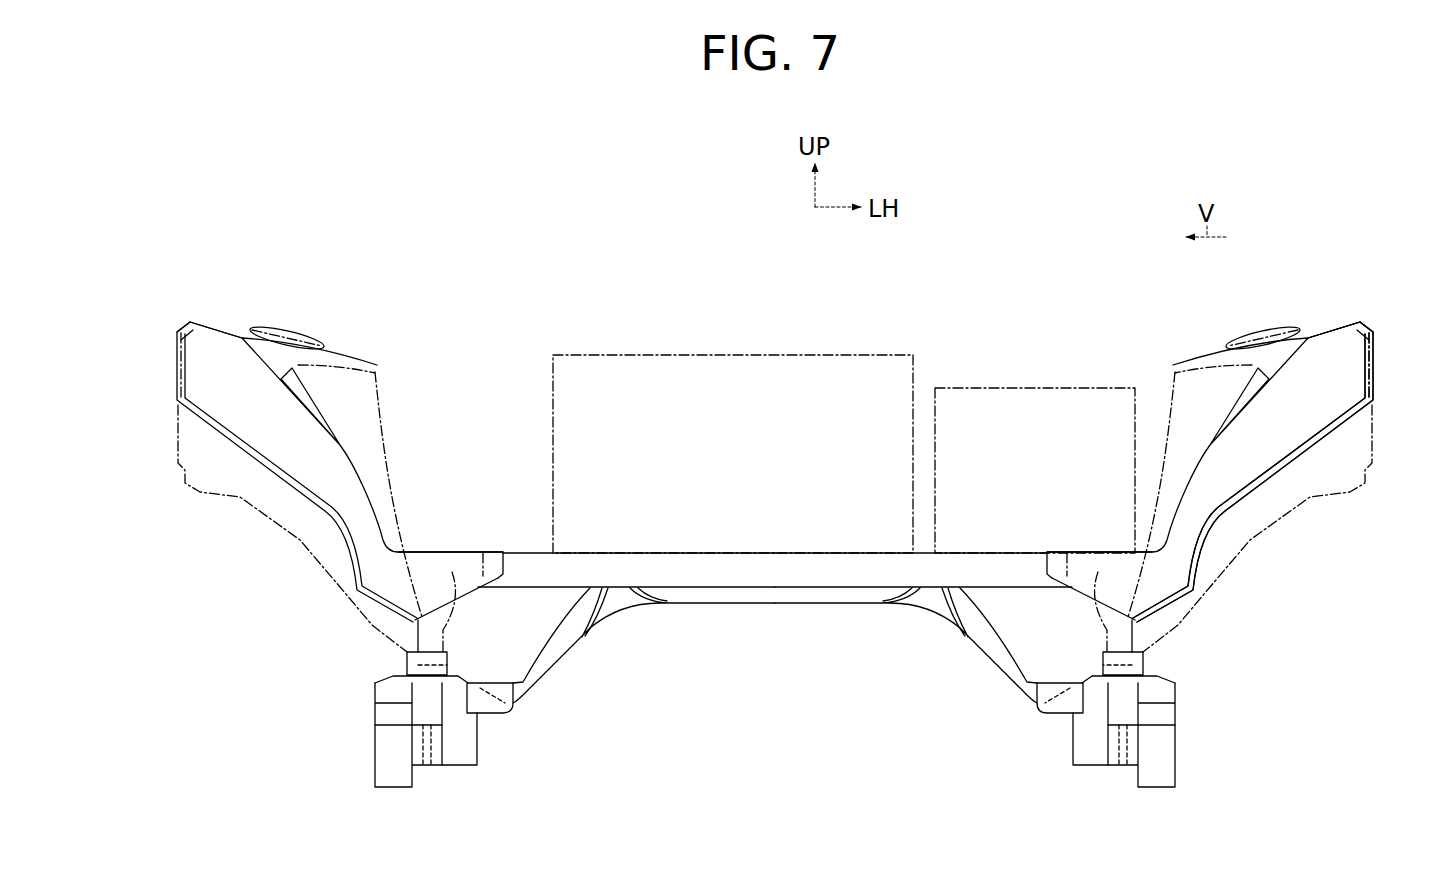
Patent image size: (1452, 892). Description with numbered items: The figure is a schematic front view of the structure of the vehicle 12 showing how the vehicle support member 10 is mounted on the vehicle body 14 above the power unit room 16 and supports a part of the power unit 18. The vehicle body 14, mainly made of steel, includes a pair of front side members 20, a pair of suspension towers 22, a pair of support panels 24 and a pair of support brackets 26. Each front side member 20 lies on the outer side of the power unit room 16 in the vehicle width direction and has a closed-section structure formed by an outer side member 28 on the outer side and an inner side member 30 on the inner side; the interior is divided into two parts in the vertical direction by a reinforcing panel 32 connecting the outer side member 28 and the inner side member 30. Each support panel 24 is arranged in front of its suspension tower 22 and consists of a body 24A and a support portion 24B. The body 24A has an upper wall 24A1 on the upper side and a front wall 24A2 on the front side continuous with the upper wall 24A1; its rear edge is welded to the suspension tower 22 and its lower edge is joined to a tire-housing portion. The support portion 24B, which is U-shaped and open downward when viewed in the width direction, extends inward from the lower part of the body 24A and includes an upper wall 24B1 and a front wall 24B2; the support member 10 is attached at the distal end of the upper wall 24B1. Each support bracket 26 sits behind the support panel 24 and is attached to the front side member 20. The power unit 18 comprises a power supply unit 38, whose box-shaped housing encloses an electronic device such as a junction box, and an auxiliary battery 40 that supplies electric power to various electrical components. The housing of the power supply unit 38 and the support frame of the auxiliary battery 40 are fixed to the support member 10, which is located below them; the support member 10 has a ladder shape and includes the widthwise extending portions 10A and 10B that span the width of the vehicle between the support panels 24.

The vehicle support member 10 is at (526, 518).
The widthwise extending portion 10A is at (817, 570).
The widthwise extending portion 10B is at (598, 630).
The vehicle 12 is at (1289, 219).
The vehicle body 14 is at (1378, 322).
The power unit room 16 is at (769, 746).
The power unit 18 is at (844, 412).
The front side member 20 is at (769, 761).
The suspension tower 22 is at (342, 344).
The support panel 24 is at (175, 366).
The body 24A is at (208, 323).
The upper wall 24A1 is at (227, 330).
The front wall 24A2 is at (268, 413).
The support portion 24B is at (433, 547).
The upper wall 24B1 is at (480, 551).
The front wall 24B2 is at (447, 578).
The support bracket 26 is at (498, 703).
The outer side member 28 is at (372, 697).
The inner side member 30 is at (460, 750).
The reinforcing panel 32 is at (427, 727).
The power supply unit 38 is at (706, 353).
The auxiliary battery 40 is at (1075, 388).